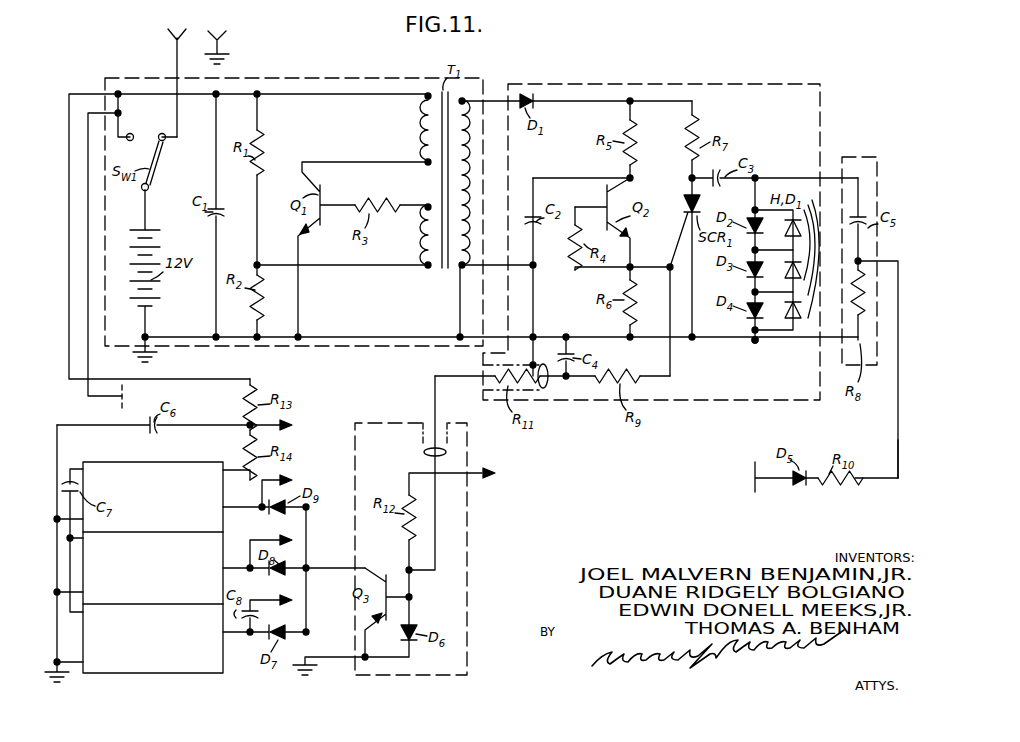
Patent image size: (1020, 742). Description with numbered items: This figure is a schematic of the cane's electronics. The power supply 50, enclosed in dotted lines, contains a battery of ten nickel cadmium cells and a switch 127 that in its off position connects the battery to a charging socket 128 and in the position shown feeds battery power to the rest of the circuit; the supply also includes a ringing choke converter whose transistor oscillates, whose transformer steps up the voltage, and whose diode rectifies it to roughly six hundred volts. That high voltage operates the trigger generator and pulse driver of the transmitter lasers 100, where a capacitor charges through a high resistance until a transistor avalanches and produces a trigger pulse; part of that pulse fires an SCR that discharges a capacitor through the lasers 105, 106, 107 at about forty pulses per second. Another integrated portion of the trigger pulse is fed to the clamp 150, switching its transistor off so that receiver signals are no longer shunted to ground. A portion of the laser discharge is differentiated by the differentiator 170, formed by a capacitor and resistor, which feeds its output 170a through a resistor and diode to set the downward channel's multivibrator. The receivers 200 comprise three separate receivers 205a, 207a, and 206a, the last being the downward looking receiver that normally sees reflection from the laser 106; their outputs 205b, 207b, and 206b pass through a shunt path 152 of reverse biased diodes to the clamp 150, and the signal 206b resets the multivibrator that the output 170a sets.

The power supply 50 is at (290, 76).
The transmitter lasers 100 is at (643, 84).
The laser 105 is at (778, 230).
The laser transmitter 106 is at (778, 271).
The laser 107 is at (778, 311).
The switch 127 is at (152, 176).
The charging socket 128 is at (206, 36).
The clamp 150 is at (470, 540).
The shunt path 152 is at (306, 560).
The differentiator 170 is at (862, 156).
The output 170a is at (897, 440).
The receivers 200 is at (105, 466).
The receiver 205a is at (200, 495).
The output 205b is at (297, 483).
The downward looking receiver 206a is at (189, 635).
The signal 206b is at (267, 607).
The receiver 207a is at (189, 582).
The output 207b is at (274, 544).